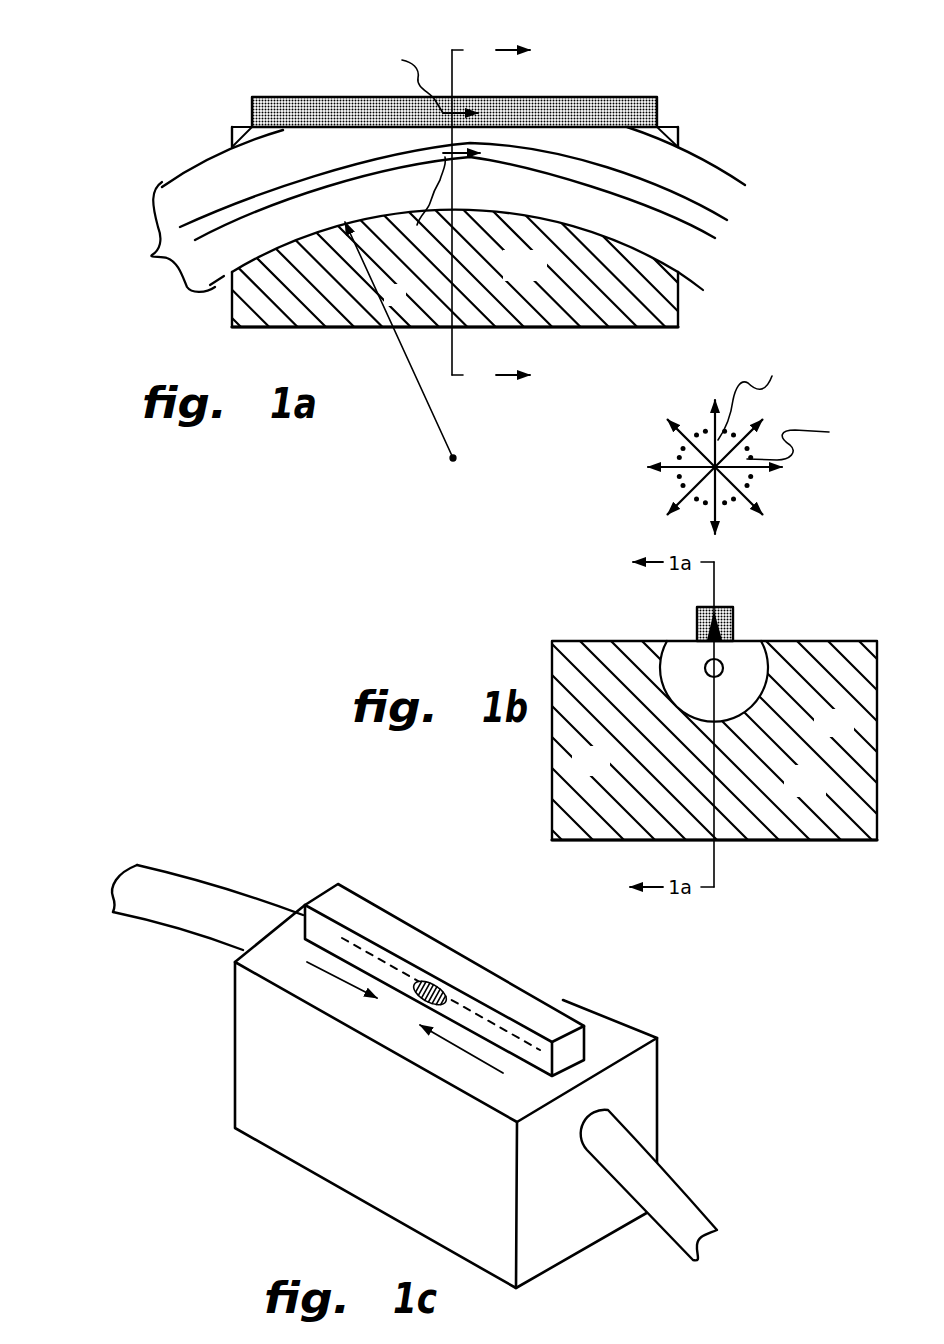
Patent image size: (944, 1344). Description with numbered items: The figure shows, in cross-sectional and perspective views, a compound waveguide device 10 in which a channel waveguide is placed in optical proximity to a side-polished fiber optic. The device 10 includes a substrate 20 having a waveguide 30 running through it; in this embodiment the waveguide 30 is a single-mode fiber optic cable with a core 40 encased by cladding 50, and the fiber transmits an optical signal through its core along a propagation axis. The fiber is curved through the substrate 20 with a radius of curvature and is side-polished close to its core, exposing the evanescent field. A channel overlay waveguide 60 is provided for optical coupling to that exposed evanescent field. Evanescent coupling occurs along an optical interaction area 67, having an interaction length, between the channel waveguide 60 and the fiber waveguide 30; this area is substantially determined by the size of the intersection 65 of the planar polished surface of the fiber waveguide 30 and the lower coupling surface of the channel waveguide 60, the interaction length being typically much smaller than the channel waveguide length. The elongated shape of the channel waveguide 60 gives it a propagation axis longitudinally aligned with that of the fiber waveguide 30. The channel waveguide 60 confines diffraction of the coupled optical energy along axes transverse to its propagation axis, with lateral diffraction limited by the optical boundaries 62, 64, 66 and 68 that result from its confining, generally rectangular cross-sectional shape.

In FIG. 1A, the compound waveguide device 10 is at (743, 99).
In FIG. 1A, the substrate 20 is at (507, 278).
In FIG. 1B, the substrate 20 is at (788, 795).
In FIG. 1C, the substrate 20 is at (408, 1149).
In FIG. 1A, the waveguide 30 is at (152, 255).
In FIG. 1B, the waveguide 30 is at (665, 707).
In FIG. 1C, the waveguide 30 is at (208, 890).
In FIG. 1A, the core 40 is at (710, 227).
In FIG. 1B, the core 40 is at (723, 668).
In FIG. 1A, the cladding 50 is at (718, 195).
In FIG. 1B, the cladding 50 is at (694, 715).
In FIG. 1A, the channel overlay waveguide 60 is at (607, 97).
In FIG. 1B, the channel overlay waveguide 60 is at (723, 607).
In FIG. 1C, the channel overlay waveguide 60 is at (577, 993).
In FIG. 1B, the optical boundary 62 is at (696, 628).
In FIG. 1B, the optical boundary 64 is at (734, 628).
In FIG. 1A, the intersection 65 is at (317, 131).
In FIG. 1C, the intersection 65 is at (357, 937).
In FIG. 1B, the optical boundary 66 is at (701, 606).
In FIG. 1C, the optical interaction area 67 is at (425, 982).
In FIG. 1B, the optical boundary 68 is at (733, 611).